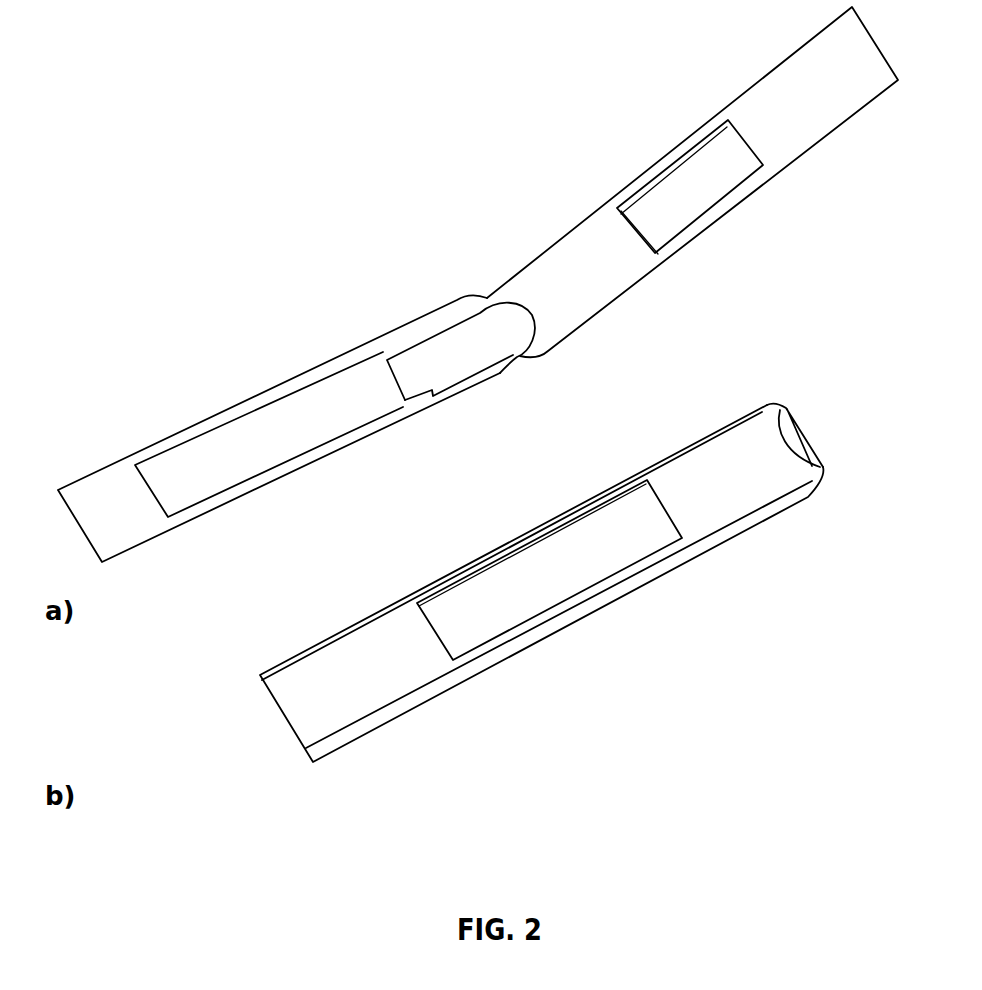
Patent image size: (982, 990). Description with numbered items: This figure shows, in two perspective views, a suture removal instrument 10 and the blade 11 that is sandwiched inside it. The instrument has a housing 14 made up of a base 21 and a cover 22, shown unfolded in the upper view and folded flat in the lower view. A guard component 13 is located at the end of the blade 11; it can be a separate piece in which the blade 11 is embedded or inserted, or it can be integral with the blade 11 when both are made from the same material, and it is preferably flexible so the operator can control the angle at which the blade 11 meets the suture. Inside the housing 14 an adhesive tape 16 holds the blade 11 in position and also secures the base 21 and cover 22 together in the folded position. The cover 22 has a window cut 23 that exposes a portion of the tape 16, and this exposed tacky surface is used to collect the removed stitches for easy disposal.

The suture removal instrument 10 is at (300, 270).
The blade 11 is at (463, 342).
The guard component 13 is at (470, 378).
The housing 14 is at (353, 658).
The adhesive tape 16 is at (262, 430).
The base 21 is at (102, 487).
The cover 22 is at (792, 80).
The window cut 23 is at (690, 185).